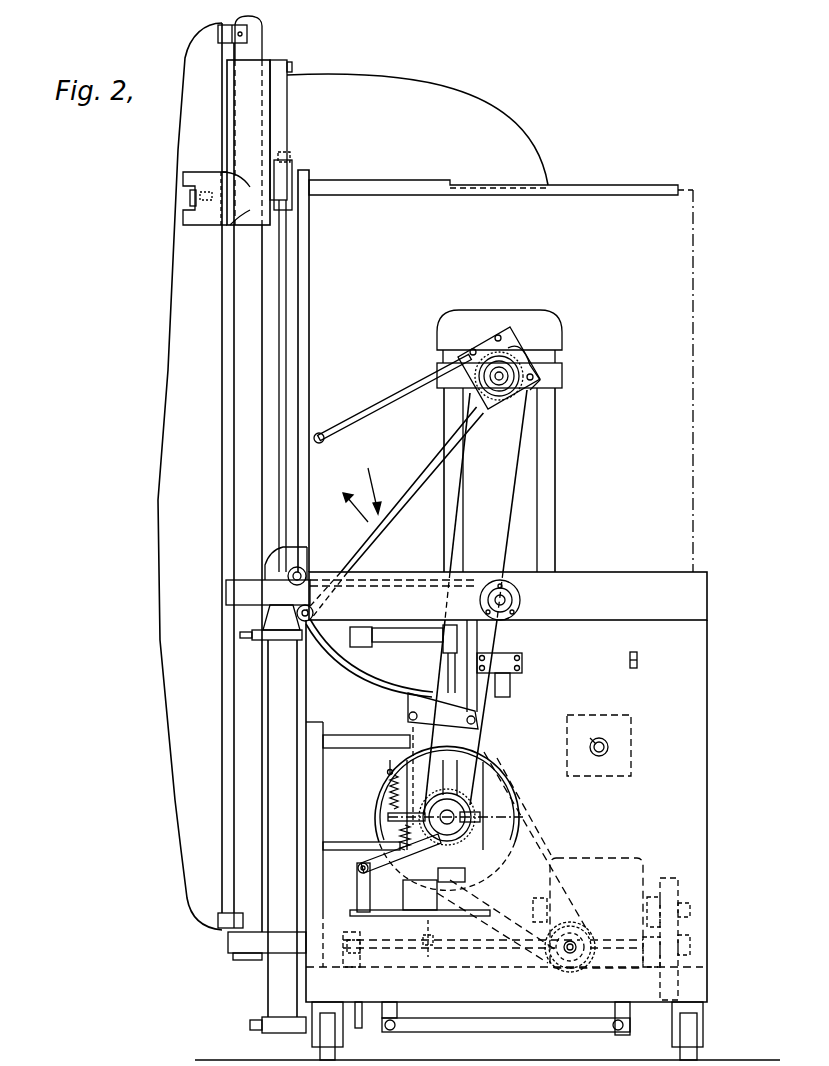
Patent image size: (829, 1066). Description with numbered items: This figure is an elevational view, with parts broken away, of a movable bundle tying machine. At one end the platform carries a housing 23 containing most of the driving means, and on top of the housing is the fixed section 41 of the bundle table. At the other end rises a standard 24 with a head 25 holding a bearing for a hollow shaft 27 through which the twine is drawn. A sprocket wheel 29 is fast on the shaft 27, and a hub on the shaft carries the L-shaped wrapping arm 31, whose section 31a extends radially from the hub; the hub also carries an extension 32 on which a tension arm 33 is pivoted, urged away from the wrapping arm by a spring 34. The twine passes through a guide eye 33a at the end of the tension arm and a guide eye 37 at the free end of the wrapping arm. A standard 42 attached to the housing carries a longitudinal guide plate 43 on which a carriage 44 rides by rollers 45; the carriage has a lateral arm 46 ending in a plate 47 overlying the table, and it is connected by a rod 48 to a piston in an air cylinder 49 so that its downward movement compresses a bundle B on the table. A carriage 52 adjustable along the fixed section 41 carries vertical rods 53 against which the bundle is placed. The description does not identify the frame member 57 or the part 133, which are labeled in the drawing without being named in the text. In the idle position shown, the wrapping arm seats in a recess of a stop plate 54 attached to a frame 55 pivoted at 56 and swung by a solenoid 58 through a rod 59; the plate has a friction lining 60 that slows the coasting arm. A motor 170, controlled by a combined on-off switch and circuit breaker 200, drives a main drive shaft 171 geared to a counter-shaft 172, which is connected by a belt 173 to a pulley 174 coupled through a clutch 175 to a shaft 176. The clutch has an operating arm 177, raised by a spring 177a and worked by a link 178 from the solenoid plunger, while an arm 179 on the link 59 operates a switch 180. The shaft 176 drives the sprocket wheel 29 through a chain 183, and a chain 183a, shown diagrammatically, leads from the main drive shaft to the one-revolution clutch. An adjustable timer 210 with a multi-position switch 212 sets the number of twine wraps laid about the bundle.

The housing 23 is at (680, 678).
The standard 24 is at (555, 488).
The head 25 is at (520, 312).
The hollow shaft 27 is at (498, 405).
The sprocket wheel 29 is at (528, 405).
The wrapping arm 31 is at (362, 484).
The section of wrapping arm 31a is at (408, 488).
The extension 32 is at (477, 340).
The tension arm 33 is at (385, 395).
The guide eye 33a is at (318, 433).
The spring 34 is at (510, 347).
The guide eye 37 is at (316, 618).
The fixed section of bundle table 41 is at (712, 575).
The standard 42 is at (250, 513).
The longitudinal guide plate 43 is at (183, 398).
The carriage 44 is at (265, 68).
The rollers 45 is at (190, 197).
The lateral arm 46 is at (420, 110).
The plate 47 is at (613, 190).
The rod 48 is at (280, 300).
The cylinder 49 is at (273, 727).
The carriage 52 is at (306, 557).
The vertical rods 53 is at (308, 310).
The stop plate 54 is at (350, 660).
The frame 55 is at (410, 700).
The pivot 56 is at (485, 720).
The frame post 57 is at (333, 740).
The solenoid 58 is at (417, 897).
The rod 59 is at (410, 736).
The friction lining 60 is at (392, 668).
The bearing 133 is at (521, 600).
The motor 170 is at (602, 868).
The main drive shaft 171 is at (467, 957).
The counter-shaft 172 is at (575, 970).
The belt 173 is at (547, 835).
The pulley 174 is at (390, 793).
The clutch 175 is at (485, 788).
The shaft 176 is at (455, 816).
The operating arm 177 is at (400, 845).
The spring 177a is at (388, 773).
The link 178 is at (403, 868).
The arm 179 is at (490, 848).
The switch 180 is at (463, 896).
The chain 183 is at (513, 543).
The chain 183a is at (433, 932).
The combined on-off switch and circuit breaker 200 is at (640, 656).
The adjustable timer 210 is at (632, 722).
The multi-position switch 212 is at (606, 748).
The bundle B is at (686, 296).